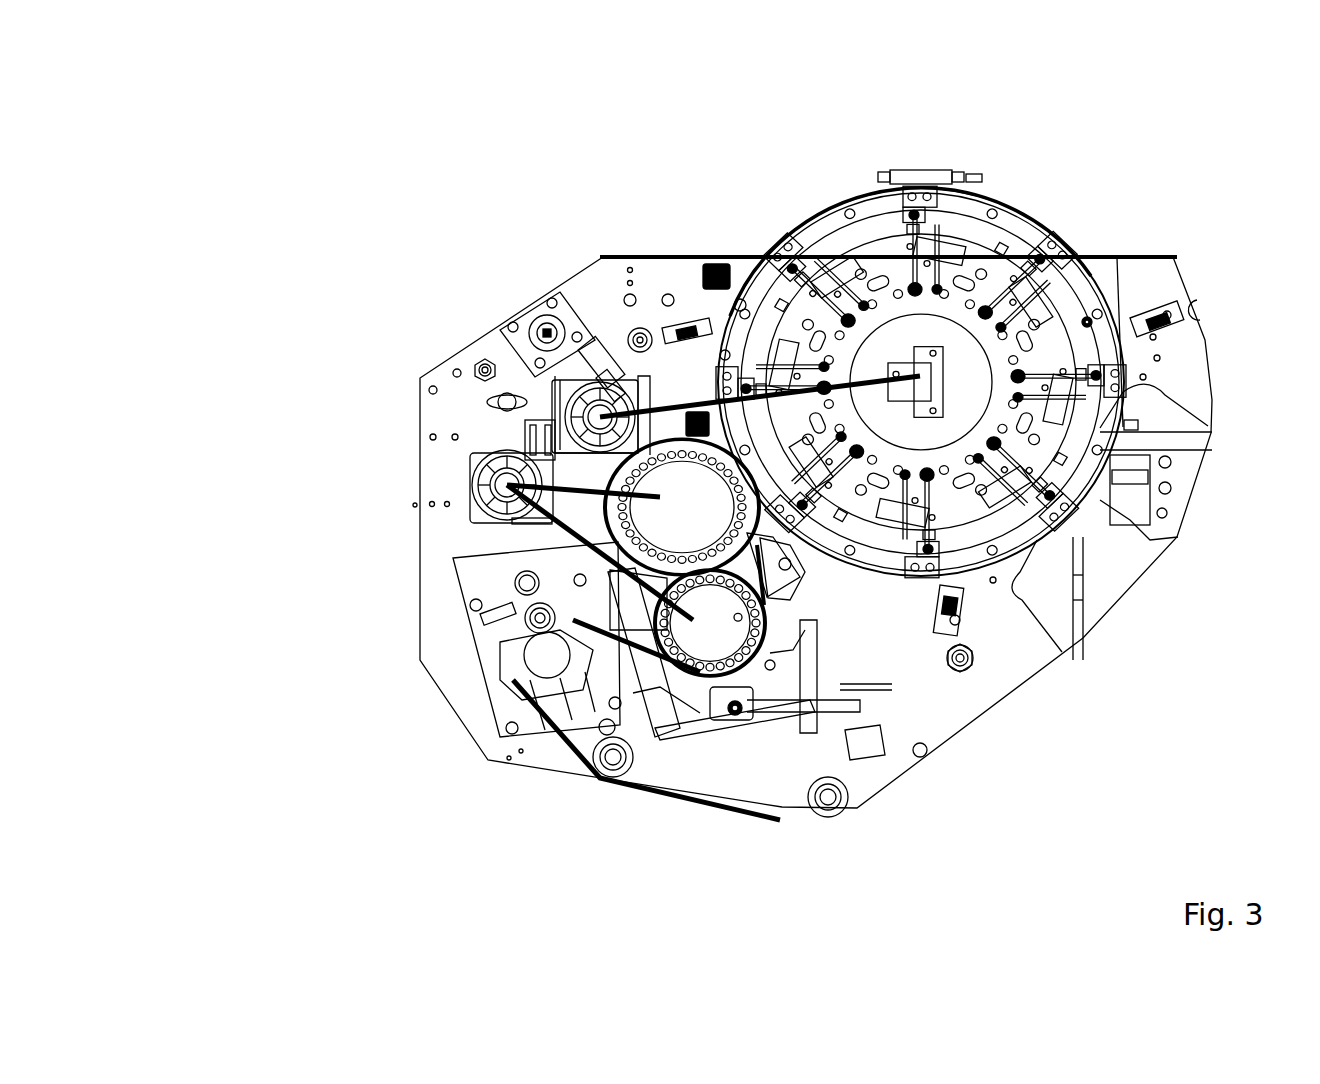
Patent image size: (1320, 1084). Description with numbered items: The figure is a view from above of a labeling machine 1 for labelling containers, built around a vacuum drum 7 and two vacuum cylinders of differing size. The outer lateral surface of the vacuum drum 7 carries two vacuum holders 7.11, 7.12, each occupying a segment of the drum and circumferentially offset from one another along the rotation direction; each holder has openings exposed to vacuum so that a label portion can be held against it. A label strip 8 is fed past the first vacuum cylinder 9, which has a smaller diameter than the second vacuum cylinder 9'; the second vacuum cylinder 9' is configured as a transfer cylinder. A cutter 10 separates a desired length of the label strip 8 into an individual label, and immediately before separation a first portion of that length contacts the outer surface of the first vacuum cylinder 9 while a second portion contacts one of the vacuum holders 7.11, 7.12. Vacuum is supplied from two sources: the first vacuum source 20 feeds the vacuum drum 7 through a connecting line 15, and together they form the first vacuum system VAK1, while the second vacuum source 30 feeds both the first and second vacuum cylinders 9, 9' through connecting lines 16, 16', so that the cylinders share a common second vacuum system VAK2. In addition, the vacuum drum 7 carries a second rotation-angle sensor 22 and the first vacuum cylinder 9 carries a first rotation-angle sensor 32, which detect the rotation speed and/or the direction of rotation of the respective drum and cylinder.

The labeling machine 1 is at (1163, 137).
The vacuum drum 7 is at (921, 332).
The vacuum holder 7.11 is at (758, 255).
The vacuum holder 7.12 is at (1019, 196).
The label strip 8 is at (677, 809).
The first vacuum cylinder 9 is at (770, 708).
The second vacuum cylinder 9' is at (521, 488).
The cutter 10 is at (796, 600).
The connecting line 15 is at (650, 405).
The connecting line 16 is at (417, 512).
The connecting line 16' is at (501, 578).
The first vacuum source 20 is at (545, 386).
The second rotation-angle sensor 22 is at (714, 264).
The second vacuum source 30 is at (453, 493).
The first rotation-angle sensor 32 is at (697, 412).
The first vacuum system VAK1 is at (681, 168).
The second vacuum system VAK2 is at (290, 595).